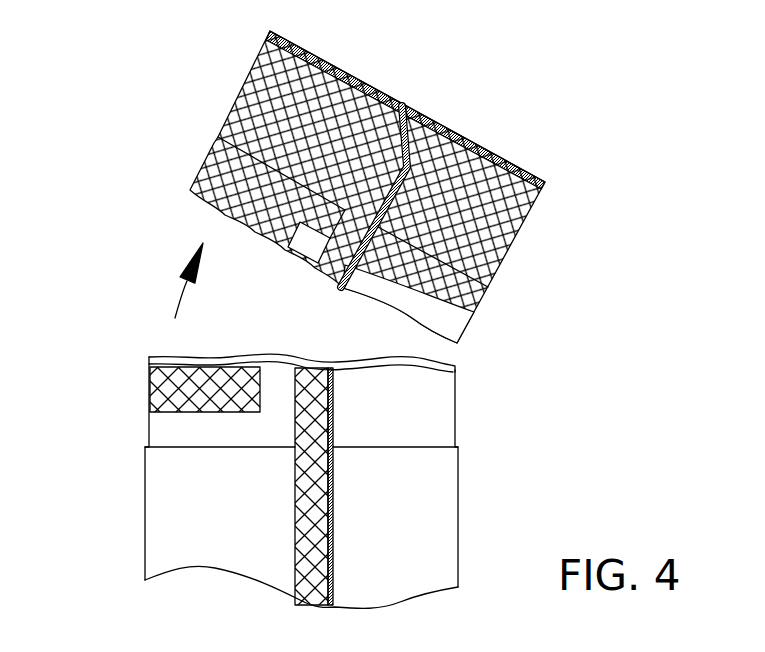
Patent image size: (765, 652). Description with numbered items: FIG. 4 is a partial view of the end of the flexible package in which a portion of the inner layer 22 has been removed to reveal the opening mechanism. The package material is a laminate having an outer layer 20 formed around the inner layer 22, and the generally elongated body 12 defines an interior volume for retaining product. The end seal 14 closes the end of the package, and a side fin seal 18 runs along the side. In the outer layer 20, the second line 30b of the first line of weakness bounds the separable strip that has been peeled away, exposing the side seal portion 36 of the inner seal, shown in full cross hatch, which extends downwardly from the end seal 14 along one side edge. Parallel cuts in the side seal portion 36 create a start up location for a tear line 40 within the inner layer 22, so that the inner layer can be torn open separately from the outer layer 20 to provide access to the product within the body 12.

The body 12 is at (190, 508).
The end seal 14 is at (485, 185).
The side fin seal 18 is at (315, 553).
The outer layer 20 is at (413, 483).
The inner layer 22 is at (413, 390).
The second line 30b is at (427, 448).
The side seal portion 36 is at (218, 168).
The tear line 40 is at (208, 211).